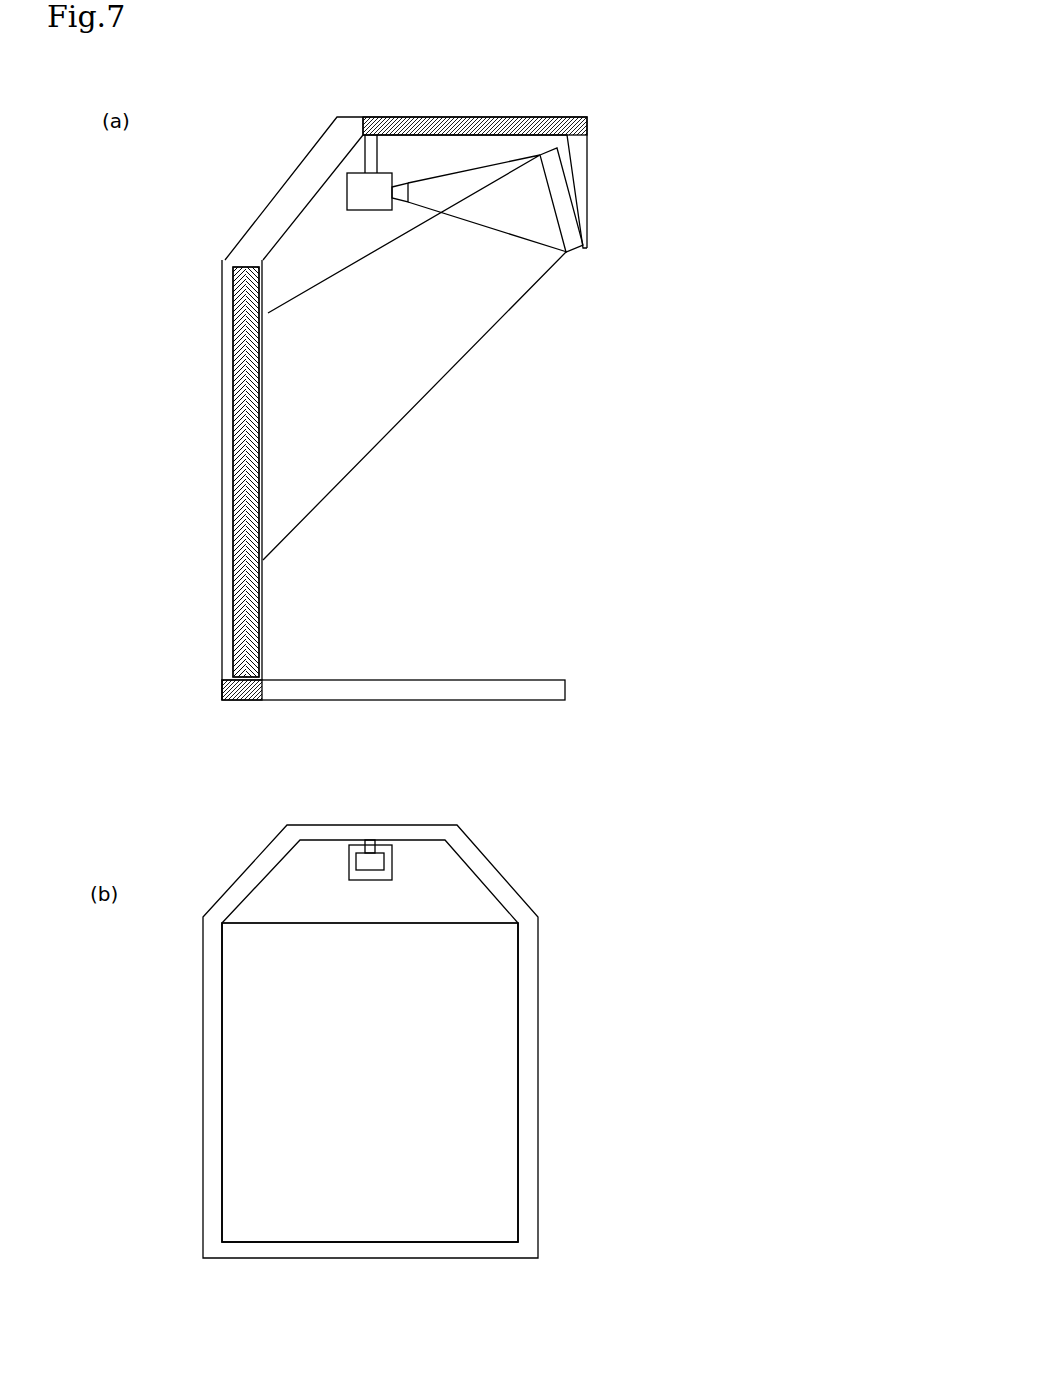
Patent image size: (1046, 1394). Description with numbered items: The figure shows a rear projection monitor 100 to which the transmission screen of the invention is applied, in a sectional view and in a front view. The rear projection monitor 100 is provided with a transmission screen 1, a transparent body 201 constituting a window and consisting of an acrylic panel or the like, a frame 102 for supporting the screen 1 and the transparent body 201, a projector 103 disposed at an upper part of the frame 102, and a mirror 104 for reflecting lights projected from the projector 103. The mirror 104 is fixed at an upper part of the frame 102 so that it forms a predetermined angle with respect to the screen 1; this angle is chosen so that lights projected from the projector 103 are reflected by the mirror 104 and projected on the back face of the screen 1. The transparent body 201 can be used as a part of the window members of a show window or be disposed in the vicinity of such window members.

The rear projection monitor 100 is at (780, 63).
The frame 102 is at (558, 118).
The projector 103 is at (378, 180).
The mirror 104 is at (567, 228).
The transmission screen 1 is at (235, 632).
The transparent body 201 is at (257, 607).